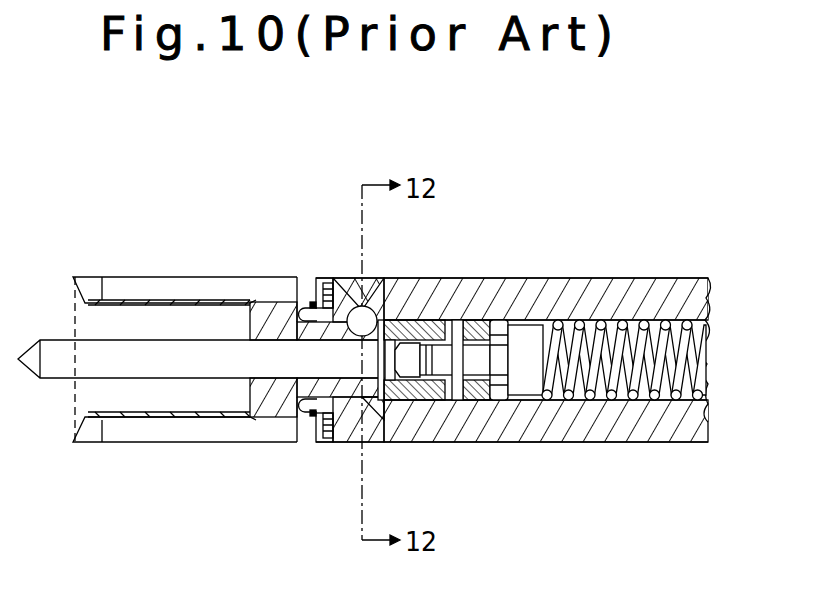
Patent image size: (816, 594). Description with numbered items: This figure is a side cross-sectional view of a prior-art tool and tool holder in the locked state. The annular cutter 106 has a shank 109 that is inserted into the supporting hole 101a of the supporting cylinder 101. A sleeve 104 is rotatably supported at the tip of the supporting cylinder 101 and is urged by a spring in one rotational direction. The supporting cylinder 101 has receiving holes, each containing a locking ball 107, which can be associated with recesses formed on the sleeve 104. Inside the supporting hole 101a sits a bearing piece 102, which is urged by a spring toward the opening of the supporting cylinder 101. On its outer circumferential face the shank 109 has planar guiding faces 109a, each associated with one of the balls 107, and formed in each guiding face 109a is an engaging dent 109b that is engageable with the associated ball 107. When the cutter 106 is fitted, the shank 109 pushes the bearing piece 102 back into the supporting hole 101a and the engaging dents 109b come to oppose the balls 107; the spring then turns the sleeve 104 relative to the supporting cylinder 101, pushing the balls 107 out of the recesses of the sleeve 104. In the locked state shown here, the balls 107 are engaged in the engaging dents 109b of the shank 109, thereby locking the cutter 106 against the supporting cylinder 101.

The supporting cylinder 101 is at (632, 442).
The supporting hole 101a is at (584, 401).
The bearing piece 102 is at (442, 320).
The sleeve 104 is at (372, 445).
The annular cutter 106 is at (205, 282).
The locking ball 107 is at (378, 278).
The shank 109 is at (325, 444).
The guiding face 109a is at (323, 277).
The engaging dent 109b is at (392, 320).